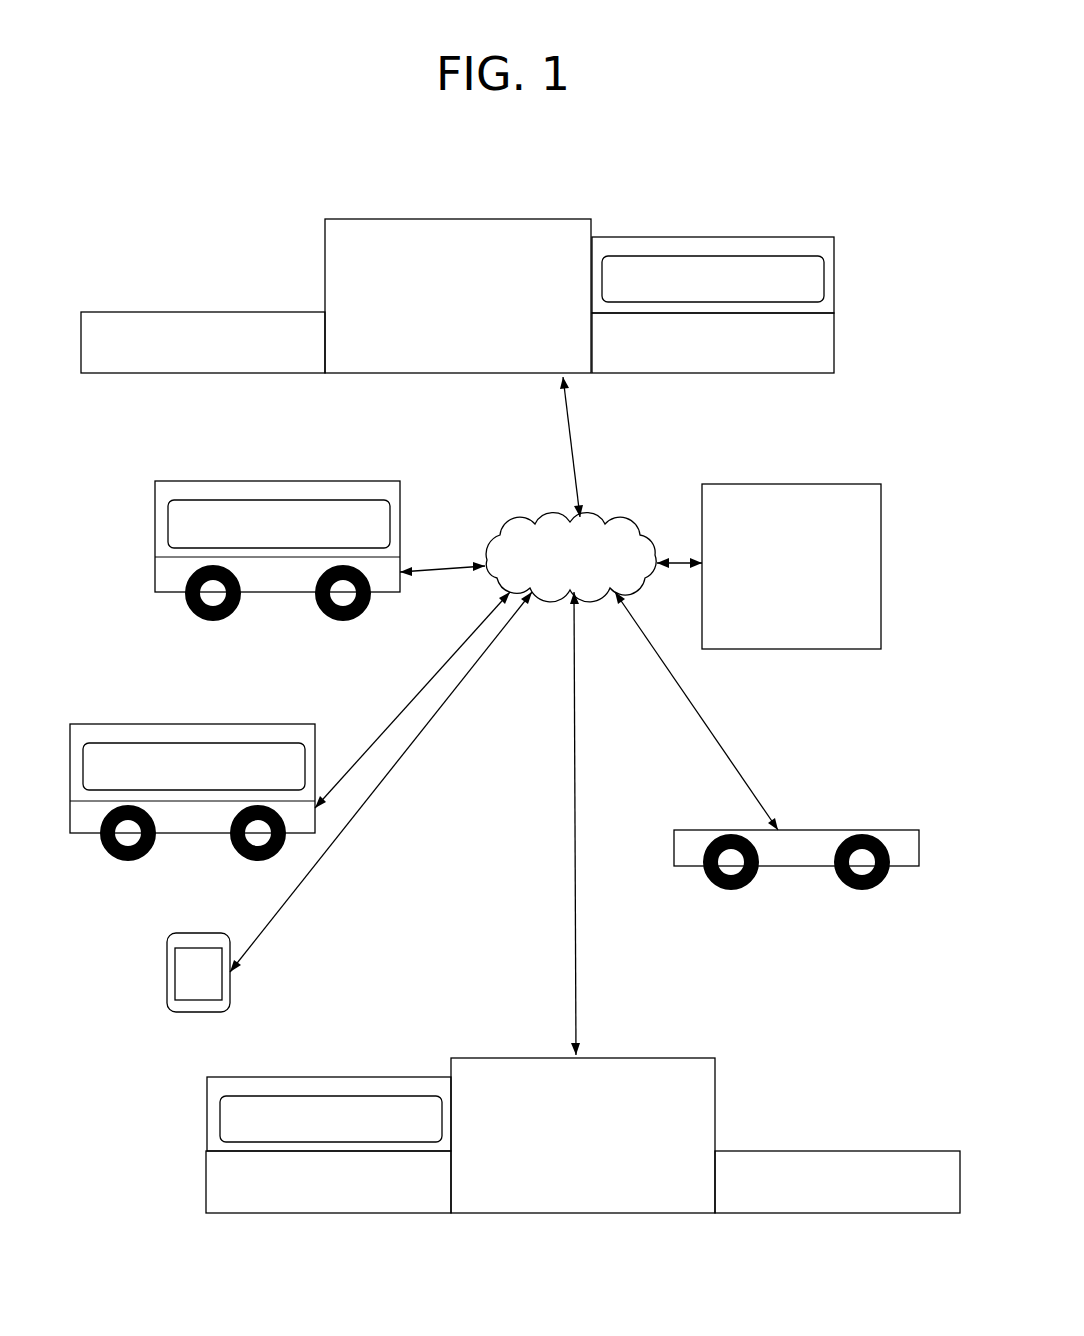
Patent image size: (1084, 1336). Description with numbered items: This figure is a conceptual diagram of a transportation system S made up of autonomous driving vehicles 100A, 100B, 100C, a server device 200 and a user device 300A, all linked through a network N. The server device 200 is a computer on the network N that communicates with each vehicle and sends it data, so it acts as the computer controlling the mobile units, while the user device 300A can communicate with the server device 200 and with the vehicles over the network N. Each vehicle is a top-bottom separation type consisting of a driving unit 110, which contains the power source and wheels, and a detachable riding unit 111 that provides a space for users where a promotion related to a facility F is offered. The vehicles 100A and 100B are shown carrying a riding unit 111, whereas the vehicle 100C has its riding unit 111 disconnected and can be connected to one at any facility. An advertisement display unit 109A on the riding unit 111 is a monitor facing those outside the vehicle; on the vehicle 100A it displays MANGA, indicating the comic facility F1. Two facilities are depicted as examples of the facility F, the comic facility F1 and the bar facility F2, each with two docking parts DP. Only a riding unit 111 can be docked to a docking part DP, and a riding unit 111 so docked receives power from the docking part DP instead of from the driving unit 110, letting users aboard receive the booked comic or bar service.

The system for transportation S is at (169, 232).
The facility F is at (458, 267).
The comic facility F1 is at (402, 218).
The bar facility F2 is at (608, 1057).
The docking part DP is at (180, 311).
The network N is at (610, 520).
The server device 200 is at (780, 483).
The autonomous driving vehicle 100A is at (318, 481).
The autonomous driving vehicle 100B is at (108, 724).
The autonomous driving vehicle 100C is at (848, 830).
The advertisement display unit 109A is at (692, 256).
The riding unit 111 is at (812, 237).
The driving unit 110 is at (153, 571).
The user device 300A is at (205, 932).